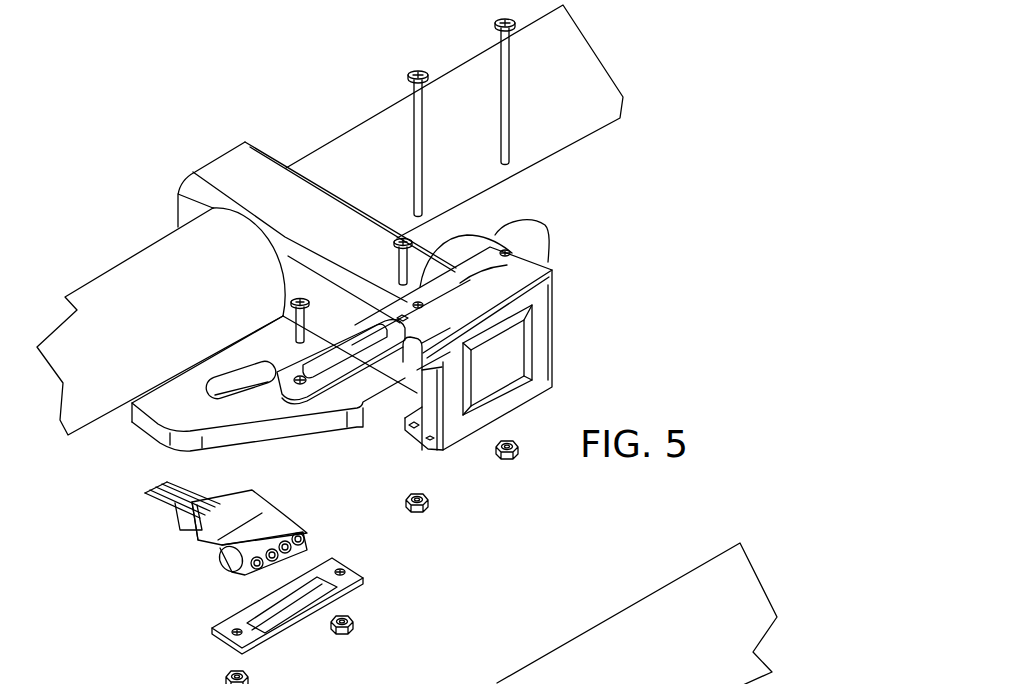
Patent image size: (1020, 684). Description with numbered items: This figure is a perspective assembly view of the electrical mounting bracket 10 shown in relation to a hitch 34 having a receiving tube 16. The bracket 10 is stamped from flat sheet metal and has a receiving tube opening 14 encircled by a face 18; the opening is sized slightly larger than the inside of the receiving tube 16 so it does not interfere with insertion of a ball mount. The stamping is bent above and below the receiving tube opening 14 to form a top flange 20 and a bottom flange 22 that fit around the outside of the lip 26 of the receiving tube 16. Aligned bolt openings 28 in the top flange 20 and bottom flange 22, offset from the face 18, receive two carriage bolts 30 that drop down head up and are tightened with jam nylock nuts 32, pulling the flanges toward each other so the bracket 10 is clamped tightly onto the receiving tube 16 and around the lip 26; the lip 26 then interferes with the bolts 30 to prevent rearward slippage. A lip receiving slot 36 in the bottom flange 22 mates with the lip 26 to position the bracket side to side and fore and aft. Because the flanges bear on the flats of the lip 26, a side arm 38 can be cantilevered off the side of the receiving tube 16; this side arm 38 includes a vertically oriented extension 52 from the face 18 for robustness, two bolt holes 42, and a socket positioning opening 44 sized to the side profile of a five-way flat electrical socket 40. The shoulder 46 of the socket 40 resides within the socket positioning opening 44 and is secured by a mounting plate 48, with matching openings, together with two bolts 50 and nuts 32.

The electrical mounting bracket 10 is at (531, 319).
The receiving tube opening 14 is at (523, 360).
The receiving tube 16 is at (226, 166).
The face 18 is at (543, 358).
The top flange 20 is at (480, 273).
The bottom flange 22 is at (421, 412).
The lip 26 is at (423, 397).
The bolt openings 28 is at (418, 300).
The bolts 30 is at (495, 21).
The nuts 32 is at (430, 502).
The hitch 34 is at (120, 290).
The lip receiving slot 36 is at (507, 387).
The side arm 38 is at (274, 400).
The electrical socket 40 is at (190, 566).
The bolt holes 42 is at (298, 385).
The socket positioning opening 44 is at (323, 390).
The shoulder 46 is at (197, 524).
The mounting plate 48 is at (255, 605).
The bolts 50 is at (297, 299).
The extension 52 is at (341, 399).